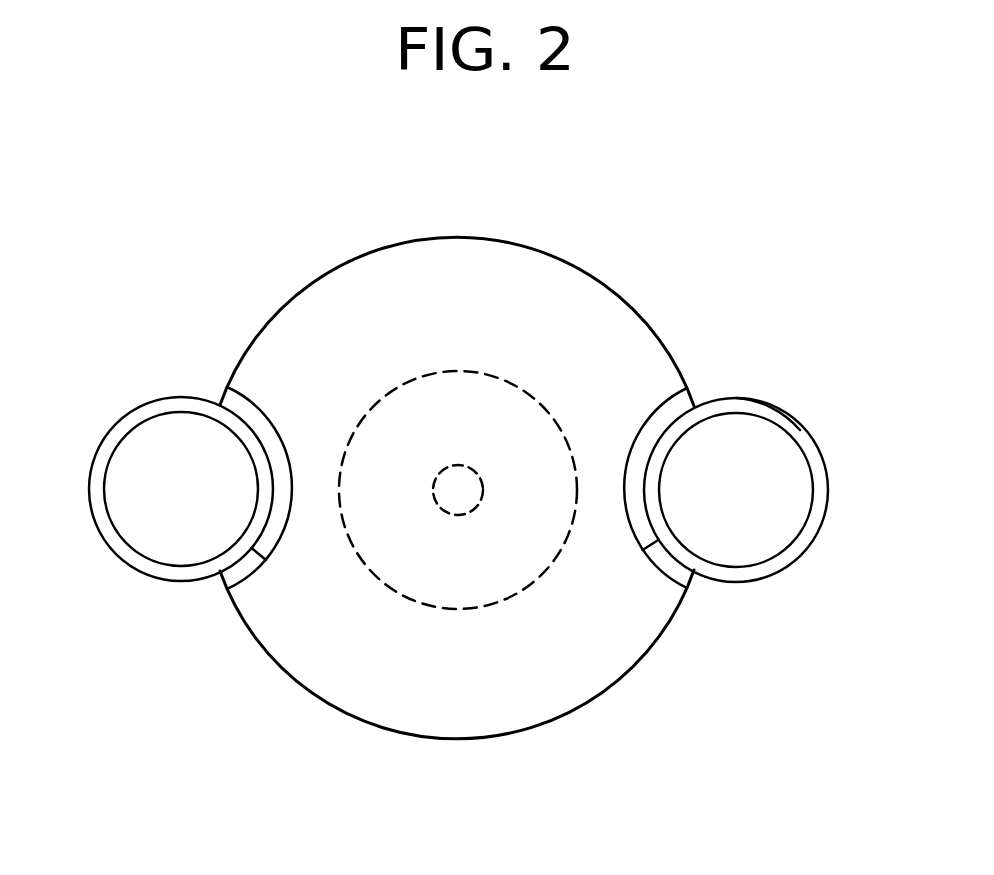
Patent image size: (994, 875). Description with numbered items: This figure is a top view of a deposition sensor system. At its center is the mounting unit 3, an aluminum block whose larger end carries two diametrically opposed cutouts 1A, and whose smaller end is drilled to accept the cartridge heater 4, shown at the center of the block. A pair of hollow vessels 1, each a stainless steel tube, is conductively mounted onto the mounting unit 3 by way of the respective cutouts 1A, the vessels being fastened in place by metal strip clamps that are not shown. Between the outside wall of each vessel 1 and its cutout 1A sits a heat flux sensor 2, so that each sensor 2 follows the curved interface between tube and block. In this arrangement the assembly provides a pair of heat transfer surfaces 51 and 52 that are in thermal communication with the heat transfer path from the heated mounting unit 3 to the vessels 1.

The hollow vessel 1 is at (100, 442).
The cutout 1A is at (722, 394).
The heat flux sensor 2 is at (237, 405).
The mounting unit 3 is at (564, 298).
The cartridge heater 4 is at (462, 487).
The heat transfer surface 51 is at (266, 560).
The heat transfer surface 52 is at (643, 550).